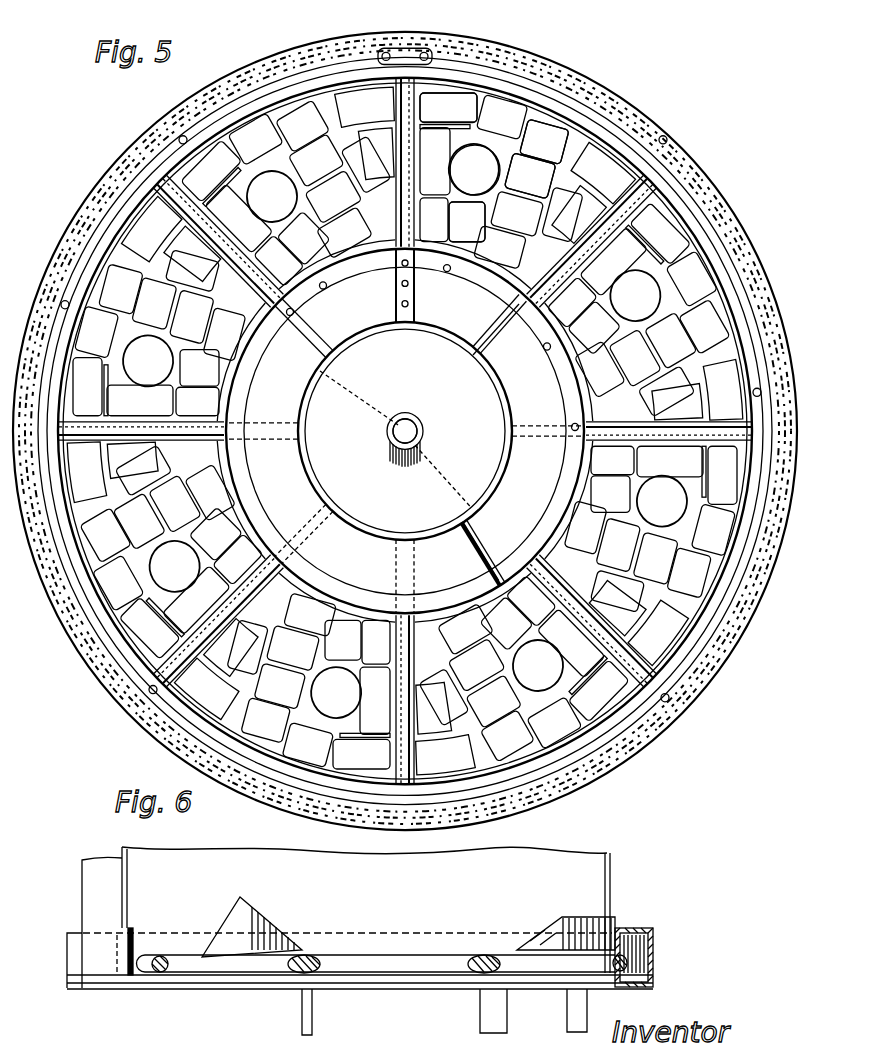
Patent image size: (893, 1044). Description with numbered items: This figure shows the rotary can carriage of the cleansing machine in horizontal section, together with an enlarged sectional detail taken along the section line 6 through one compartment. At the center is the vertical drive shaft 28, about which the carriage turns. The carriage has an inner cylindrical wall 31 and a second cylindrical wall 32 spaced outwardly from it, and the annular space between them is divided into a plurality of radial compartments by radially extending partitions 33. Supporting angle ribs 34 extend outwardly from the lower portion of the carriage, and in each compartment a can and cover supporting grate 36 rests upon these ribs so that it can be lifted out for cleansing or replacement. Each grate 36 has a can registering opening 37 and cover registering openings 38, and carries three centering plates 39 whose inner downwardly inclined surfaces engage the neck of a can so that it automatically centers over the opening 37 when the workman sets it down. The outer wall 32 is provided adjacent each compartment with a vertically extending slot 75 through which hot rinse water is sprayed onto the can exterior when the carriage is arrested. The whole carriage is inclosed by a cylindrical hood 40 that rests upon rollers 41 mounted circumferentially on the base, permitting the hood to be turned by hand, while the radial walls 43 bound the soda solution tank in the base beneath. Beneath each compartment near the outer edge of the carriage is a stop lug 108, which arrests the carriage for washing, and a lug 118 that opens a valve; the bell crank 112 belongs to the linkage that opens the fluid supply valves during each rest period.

In FIG. 5, the section line 6— 6 is at (538, 480).
In FIG. 5, the drive shaft 28 is at (422, 426).
In FIG. 5, the inner cylindrical wall 31 is at (498, 378).
In FIG. 5, the second cylindrical wall 32 is at (556, 524).
In FIG. 6, the second cylindrical wall 32 is at (92, 893).
In FIG. 5, the radially extending partitions 33 is at (640, 402).
In FIG. 6, the radially extending partitions 33 is at (588, 877).
In FIG. 5, the supporting angle ribs 34 is at (435, 92).
In FIG. 6, the supporting angle ribs 34 is at (432, 973).
In FIG. 5, the can and cover supporting grate 36 is at (562, 175).
In FIG. 6, the can and cover supporting grate 36 is at (382, 957).
In FIG. 5, the can registering opening 37 is at (488, 165).
In FIG. 5, the cover registering openings 38 is at (583, 160).
In FIG. 5, the centering plates 39 is at (359, 435).
In FIG. 6, the centering plates 39 is at (258, 924).
In FIG. 5, the cylindrical hood 40 is at (117, 190).
In FIG. 5, the rollers 41 is at (62, 262).
In FIG. 5, the radial walls 43 is at (396, 382).
In FIG. 5, the vertically extending slot 75 is at (330, 270).
In FIG. 6, the vertically extending slot 75 is at (122, 908).
In FIG. 5, the stop lug 108 is at (88, 393).
In FIG. 6, the stop lug 108 is at (588, 1005).
In FIG. 5, the bell crank 112 is at (134, 397).
In FIG. 6, the bell crank 112 is at (480, 1010).
In FIG. 5, the lug 118 is at (200, 461).
In FIG. 6, the lug 118 is at (312, 1013).